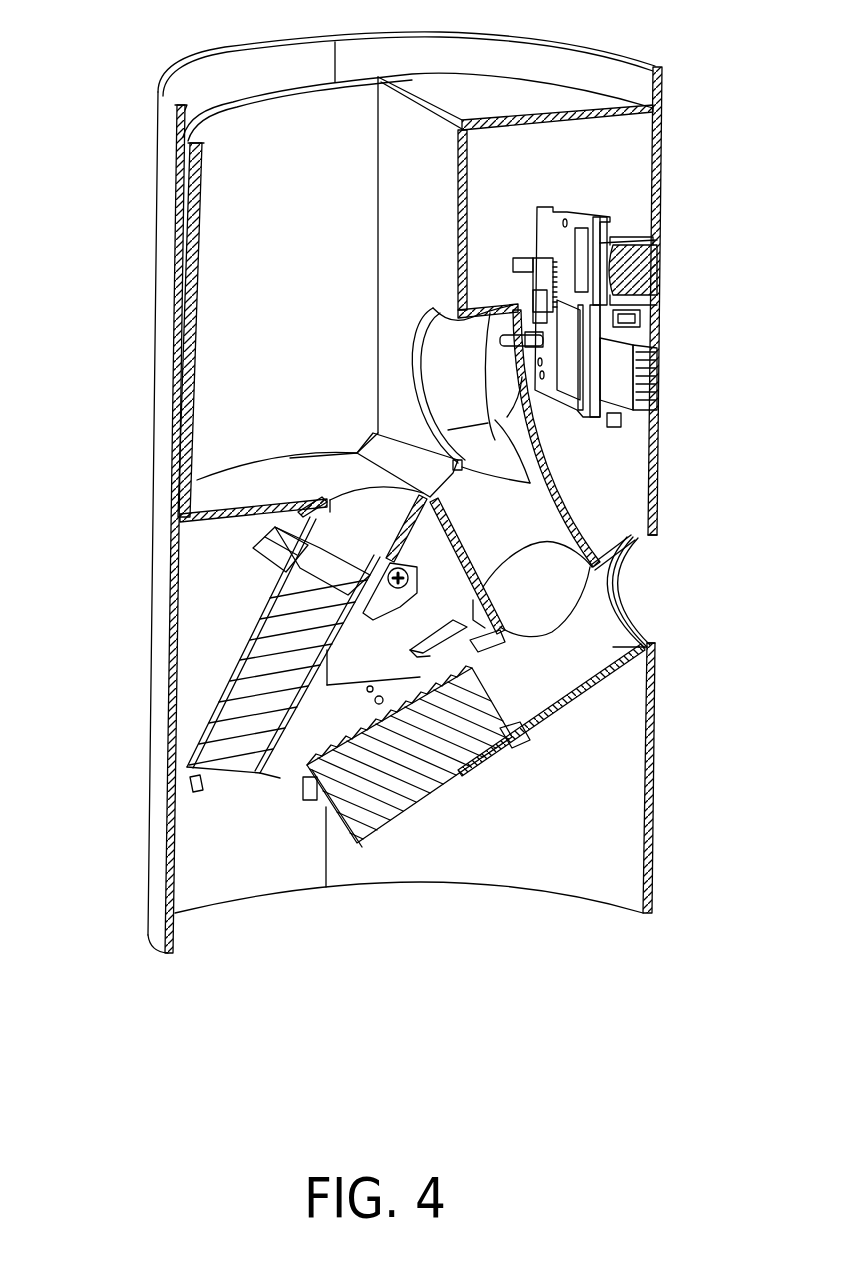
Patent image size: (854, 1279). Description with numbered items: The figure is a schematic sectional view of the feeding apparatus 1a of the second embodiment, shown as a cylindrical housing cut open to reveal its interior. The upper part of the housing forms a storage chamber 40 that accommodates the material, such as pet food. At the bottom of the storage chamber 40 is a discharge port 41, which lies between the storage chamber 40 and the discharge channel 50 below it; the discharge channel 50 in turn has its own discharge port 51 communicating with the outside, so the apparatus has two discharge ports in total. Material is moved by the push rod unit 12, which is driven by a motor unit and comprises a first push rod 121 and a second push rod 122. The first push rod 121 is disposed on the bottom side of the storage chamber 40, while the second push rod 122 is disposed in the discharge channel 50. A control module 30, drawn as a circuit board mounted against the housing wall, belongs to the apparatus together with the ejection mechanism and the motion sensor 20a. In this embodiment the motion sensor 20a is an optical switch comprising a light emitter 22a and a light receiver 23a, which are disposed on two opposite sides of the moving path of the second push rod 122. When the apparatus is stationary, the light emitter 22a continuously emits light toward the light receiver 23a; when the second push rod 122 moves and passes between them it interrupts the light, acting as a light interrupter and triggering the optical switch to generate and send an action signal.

The feeding apparatus 1a is at (160, 48).
The storage chamber 40 is at (223, 213).
The discharge port 41 is at (427, 403).
The push rod unit 12 is at (225, 580).
The first push rod 121 is at (283, 633).
The second push rod 122 is at (398, 800).
The motion sensor 20a is at (440, 640).
The light emitter 22a is at (478, 650).
The light receiver 23a is at (528, 738).
The control module 30 is at (652, 367).
The discharge channel 50 is at (649, 651).
The discharge port 51 is at (630, 596).